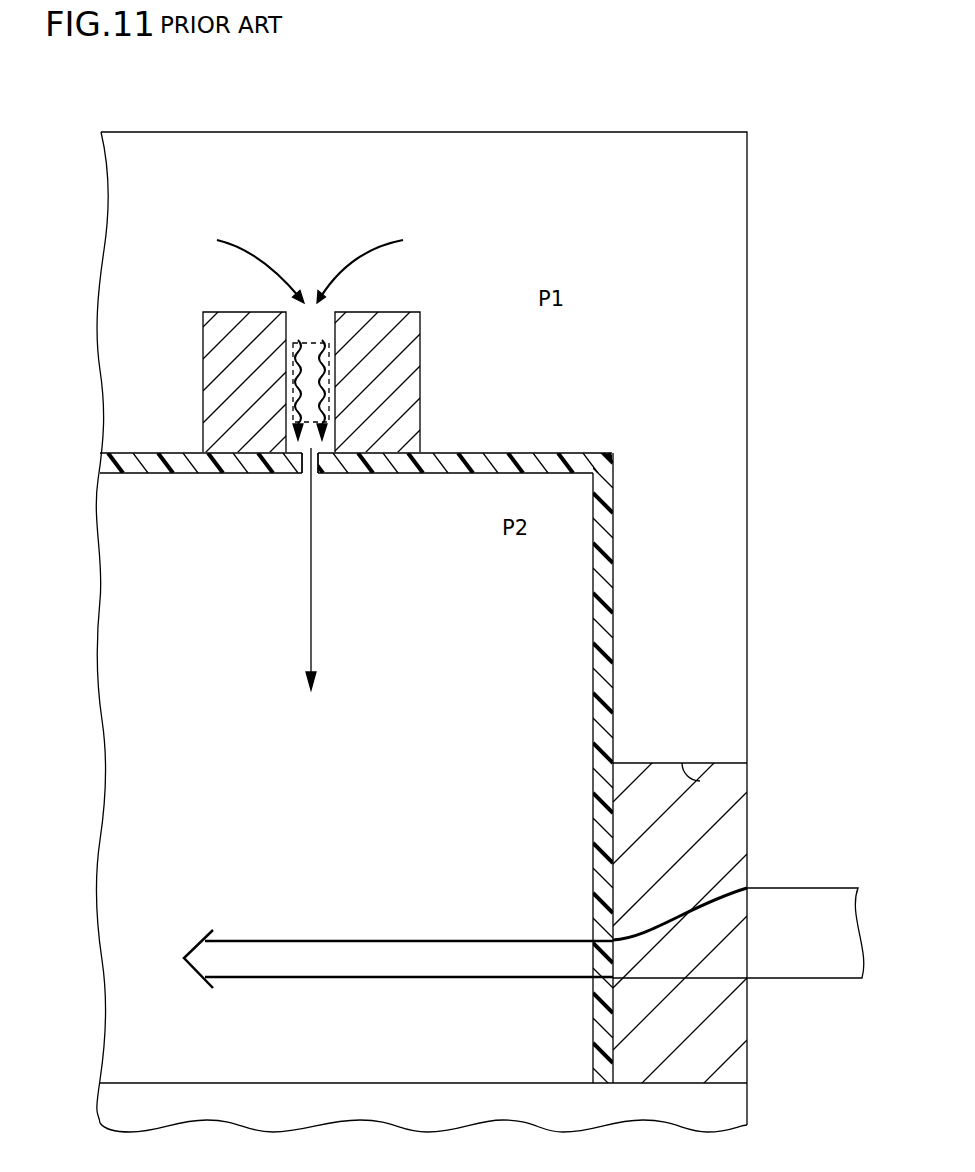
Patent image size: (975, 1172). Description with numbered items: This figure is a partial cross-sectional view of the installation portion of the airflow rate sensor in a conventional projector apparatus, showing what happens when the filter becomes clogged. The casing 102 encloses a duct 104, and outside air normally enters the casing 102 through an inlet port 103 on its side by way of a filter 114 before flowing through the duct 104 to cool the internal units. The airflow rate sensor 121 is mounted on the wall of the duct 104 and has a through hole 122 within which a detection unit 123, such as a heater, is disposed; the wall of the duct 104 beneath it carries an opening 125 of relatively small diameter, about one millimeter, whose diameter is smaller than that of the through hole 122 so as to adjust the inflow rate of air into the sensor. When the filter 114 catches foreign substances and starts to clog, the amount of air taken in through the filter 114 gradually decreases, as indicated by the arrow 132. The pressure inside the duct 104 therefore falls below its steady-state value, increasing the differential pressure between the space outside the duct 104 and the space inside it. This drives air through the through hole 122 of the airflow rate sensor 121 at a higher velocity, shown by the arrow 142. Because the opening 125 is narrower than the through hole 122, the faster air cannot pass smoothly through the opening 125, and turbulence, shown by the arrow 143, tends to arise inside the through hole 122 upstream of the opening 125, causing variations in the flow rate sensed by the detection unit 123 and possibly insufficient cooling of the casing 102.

The casing 102 is at (748, 232).
The duct 104 is at (605, 553).
The inlet port 103 is at (700, 781).
The filter 114 is at (697, 817).
The airflow rate sensor 121 is at (395, 360).
The through hole 122 is at (333, 318).
The detection unit 123 is at (290, 378).
The opening 125 is at (303, 472).
The arrow 132 is at (818, 980).
The arrow 142 is at (308, 580).
The arrow 143 is at (300, 420).